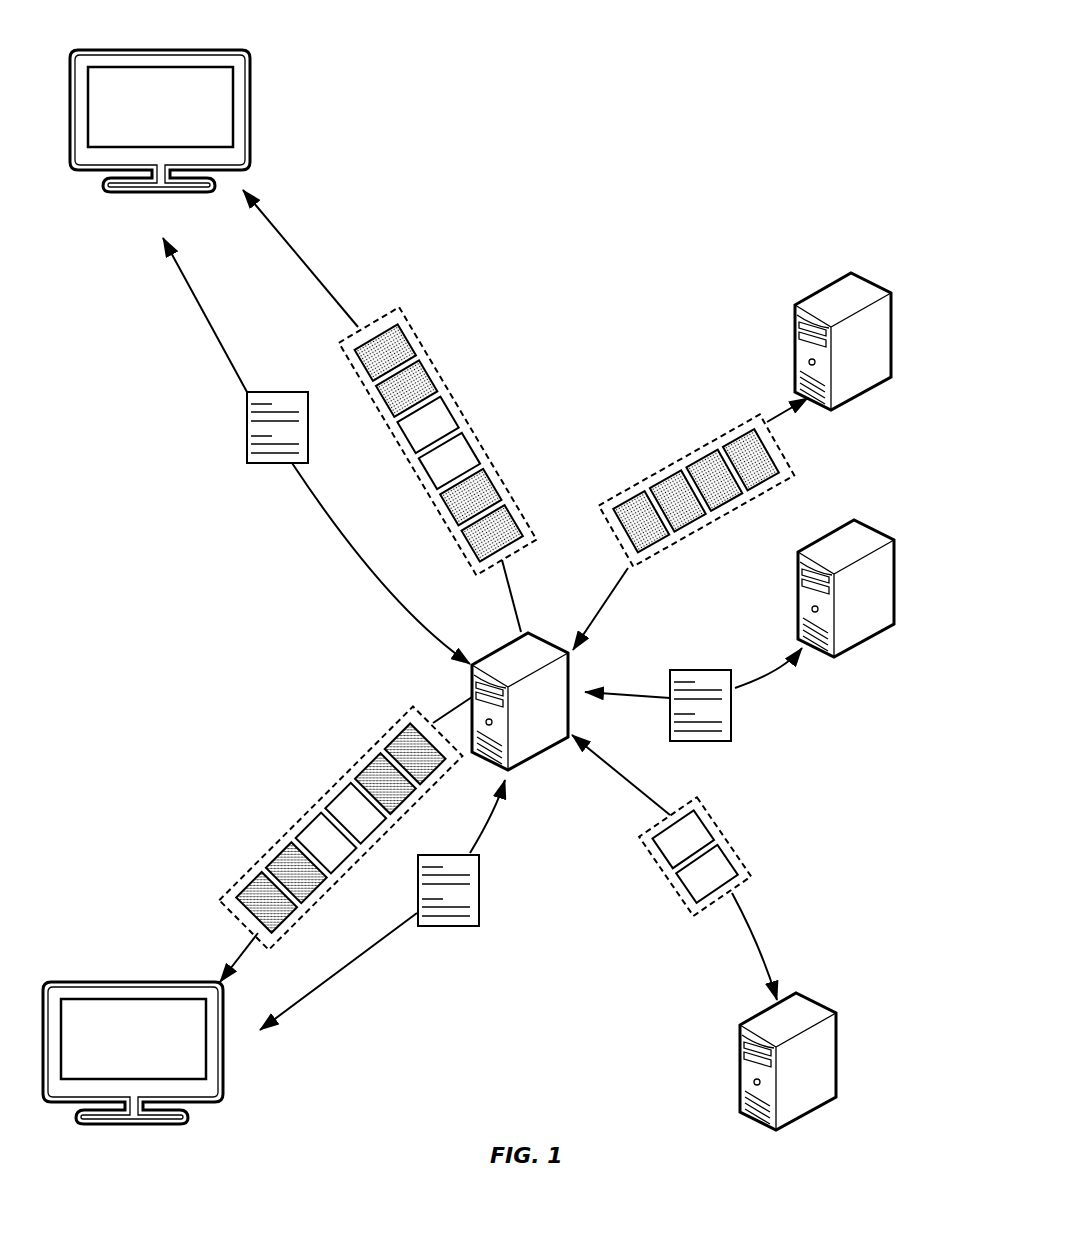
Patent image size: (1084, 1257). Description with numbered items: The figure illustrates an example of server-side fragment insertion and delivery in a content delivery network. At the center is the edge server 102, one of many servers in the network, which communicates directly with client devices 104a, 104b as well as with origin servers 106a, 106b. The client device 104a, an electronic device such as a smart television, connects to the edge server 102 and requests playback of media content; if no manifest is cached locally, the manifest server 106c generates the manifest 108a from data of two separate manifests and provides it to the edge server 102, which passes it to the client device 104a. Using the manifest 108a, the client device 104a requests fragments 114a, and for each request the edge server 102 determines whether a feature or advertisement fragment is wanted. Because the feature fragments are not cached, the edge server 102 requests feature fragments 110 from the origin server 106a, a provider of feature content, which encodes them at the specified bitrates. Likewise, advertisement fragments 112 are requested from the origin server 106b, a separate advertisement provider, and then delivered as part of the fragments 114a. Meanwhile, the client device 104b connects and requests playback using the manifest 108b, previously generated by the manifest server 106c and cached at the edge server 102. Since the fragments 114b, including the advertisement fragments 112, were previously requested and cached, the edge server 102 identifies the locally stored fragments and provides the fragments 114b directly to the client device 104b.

The edge server 102 is at (512, 772).
The client device 104a is at (217, 50).
The client device 104b is at (152, 982).
The origin server 106a is at (878, 290).
The origin server 106b is at (818, 1000).
The manifest server 106c is at (880, 537).
The manifest 108a is at (257, 463).
The manifest 108b is at (465, 925).
The feature fragments 110 is at (732, 430).
The advertisement fragments 112 is at (698, 798).
The fragments 114a is at (400, 310).
The fragments 114b is at (337, 788).